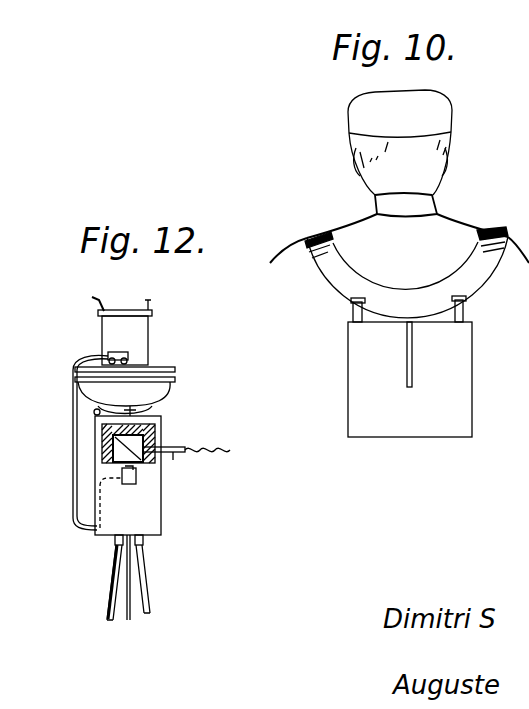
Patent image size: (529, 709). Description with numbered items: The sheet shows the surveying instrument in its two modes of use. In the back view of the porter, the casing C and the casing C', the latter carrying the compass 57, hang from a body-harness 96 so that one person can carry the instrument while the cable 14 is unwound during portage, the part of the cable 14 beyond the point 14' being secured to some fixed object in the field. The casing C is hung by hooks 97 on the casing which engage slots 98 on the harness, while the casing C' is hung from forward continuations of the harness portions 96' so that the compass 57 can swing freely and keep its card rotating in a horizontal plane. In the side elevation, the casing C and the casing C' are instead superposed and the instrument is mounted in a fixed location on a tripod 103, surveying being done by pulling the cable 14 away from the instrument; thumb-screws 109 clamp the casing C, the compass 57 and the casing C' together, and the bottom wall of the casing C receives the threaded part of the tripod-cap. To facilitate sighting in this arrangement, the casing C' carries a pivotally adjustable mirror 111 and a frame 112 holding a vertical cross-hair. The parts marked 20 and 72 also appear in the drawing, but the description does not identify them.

In FIG. 10, the body-harness 96 is at (407, 266).
In FIG. 10, the harness portions 96' is at (416, 230).
In FIG. 10, the hooks 97 is at (355, 312).
In FIG. 10, the slots 98 is at (352, 301).
In FIG. 10, the casing C is at (423, 393).
In FIG. 12, the casing C is at (141, 475).
In FIG. 10, the slot / bar 20 is at (405, 362).
In FIG. 12, the slot / bar 20 is at (178, 448).
In FIG. 12, the casing C' is at (142, 337).
In FIG. 12, the pivotally adjustable mirror 111 is at (104, 302).
In FIG. 12, the frame 112 is at (152, 306).
In FIG. 12, the compass 57 is at (160, 393).
In FIG. 12, the hose 72 is at (73, 430).
In FIG. 12, the thumb-screws 109 is at (94, 412).
In FIG. 12, the cable 14 is at (207, 460).
In FIG. 12, the point 14' is at (184, 466).
In FIG. 12, the tripod 103 is at (140, 551).